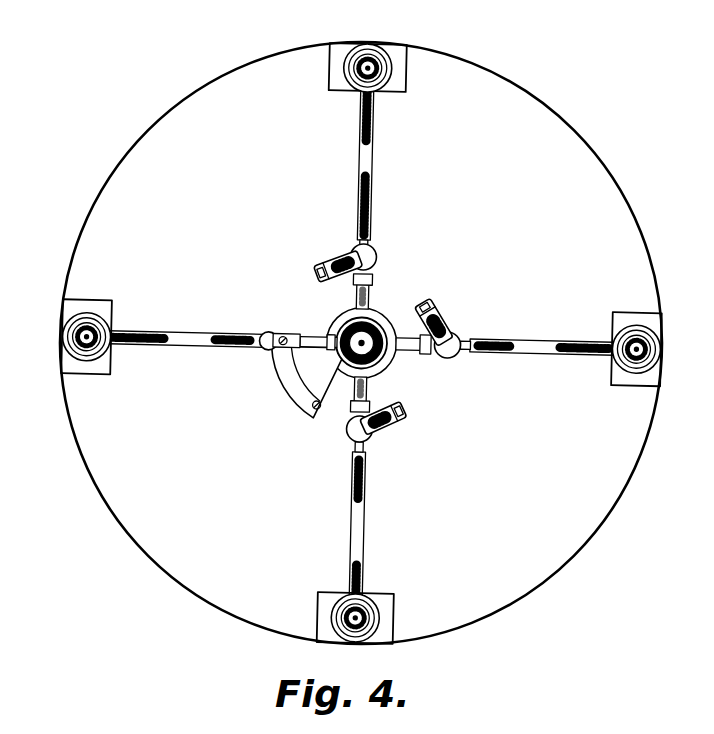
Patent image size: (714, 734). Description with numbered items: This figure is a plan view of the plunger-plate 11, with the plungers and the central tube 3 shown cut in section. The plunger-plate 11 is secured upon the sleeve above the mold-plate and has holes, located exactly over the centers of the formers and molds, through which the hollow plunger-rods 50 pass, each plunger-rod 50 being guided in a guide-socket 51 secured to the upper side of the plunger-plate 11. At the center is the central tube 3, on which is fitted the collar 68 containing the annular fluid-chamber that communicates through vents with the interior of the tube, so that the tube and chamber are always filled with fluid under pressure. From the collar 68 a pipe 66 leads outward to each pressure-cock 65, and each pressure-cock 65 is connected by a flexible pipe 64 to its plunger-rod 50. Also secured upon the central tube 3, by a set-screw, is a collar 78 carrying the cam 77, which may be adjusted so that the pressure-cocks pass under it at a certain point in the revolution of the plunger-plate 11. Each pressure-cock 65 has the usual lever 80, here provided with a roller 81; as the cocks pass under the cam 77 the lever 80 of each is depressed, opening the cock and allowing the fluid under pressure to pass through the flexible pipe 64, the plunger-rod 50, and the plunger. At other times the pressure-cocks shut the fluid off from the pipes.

The central tube 3 is at (383, 357).
The plunger-plate 11 is at (361, 343).
The plunger-rod 50 is at (366, 66).
The guide-socket 51 is at (389, 70).
The flexible pipe 64 is at (375, 162).
The pressure-cock 65 is at (373, 255).
The pipe 66 is at (370, 289).
The collar 68 is at (340, 320).
The cam 77 is at (288, 378).
The collar 78 is at (370, 330).
The lever 80 is at (348, 262).
The roller 81 is at (316, 273).